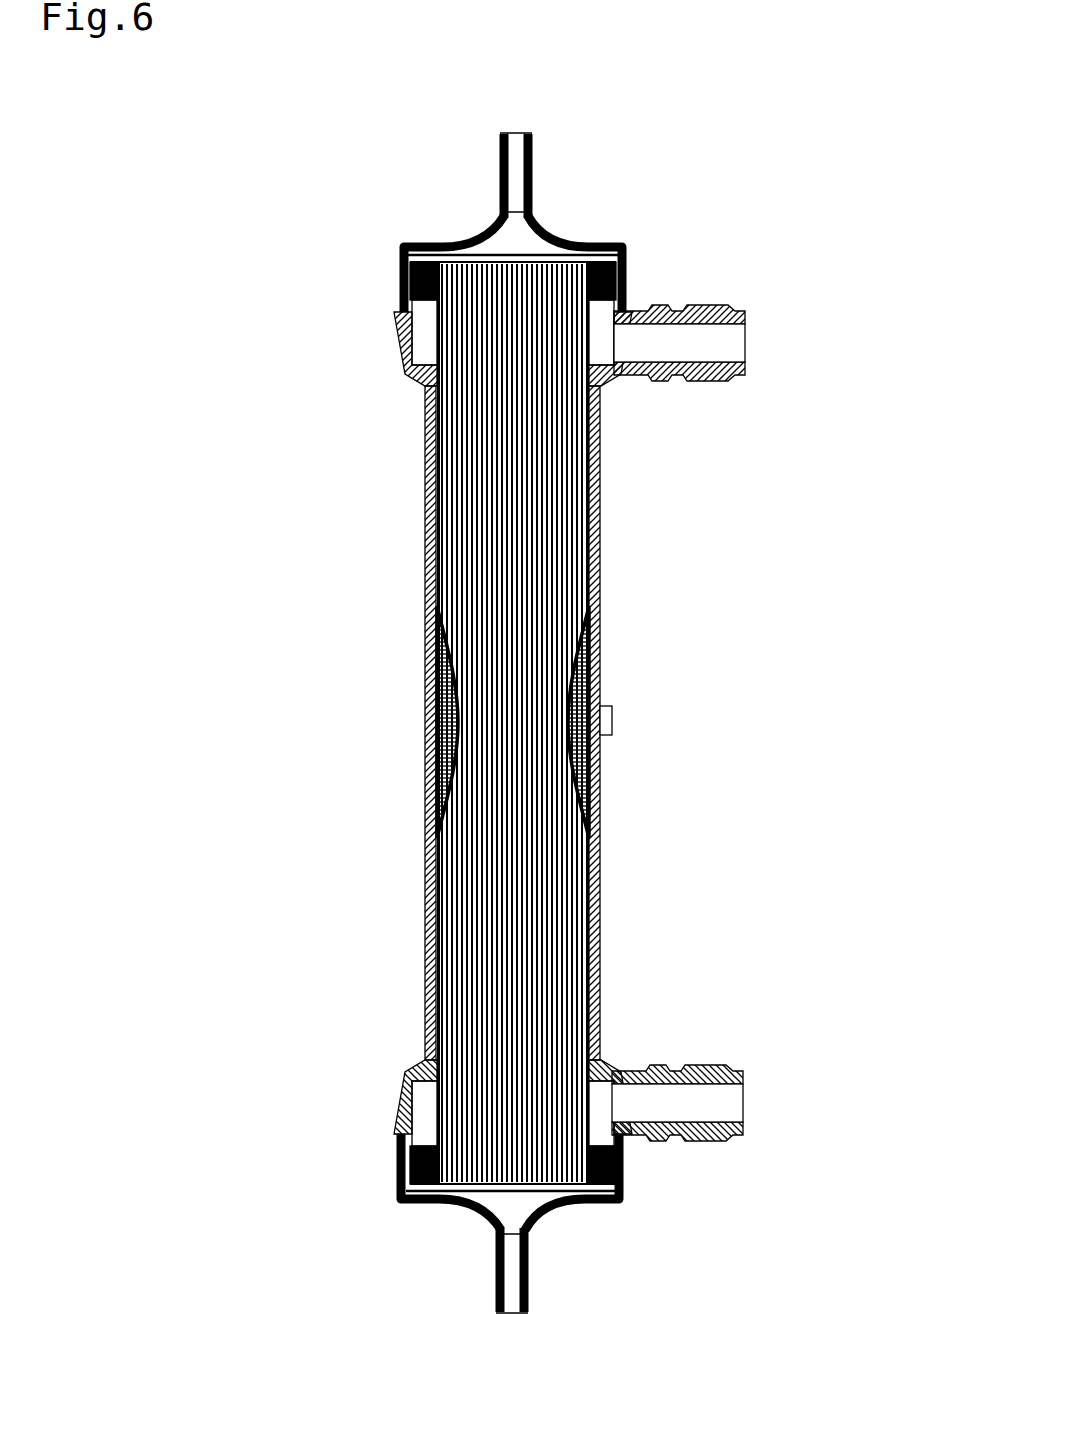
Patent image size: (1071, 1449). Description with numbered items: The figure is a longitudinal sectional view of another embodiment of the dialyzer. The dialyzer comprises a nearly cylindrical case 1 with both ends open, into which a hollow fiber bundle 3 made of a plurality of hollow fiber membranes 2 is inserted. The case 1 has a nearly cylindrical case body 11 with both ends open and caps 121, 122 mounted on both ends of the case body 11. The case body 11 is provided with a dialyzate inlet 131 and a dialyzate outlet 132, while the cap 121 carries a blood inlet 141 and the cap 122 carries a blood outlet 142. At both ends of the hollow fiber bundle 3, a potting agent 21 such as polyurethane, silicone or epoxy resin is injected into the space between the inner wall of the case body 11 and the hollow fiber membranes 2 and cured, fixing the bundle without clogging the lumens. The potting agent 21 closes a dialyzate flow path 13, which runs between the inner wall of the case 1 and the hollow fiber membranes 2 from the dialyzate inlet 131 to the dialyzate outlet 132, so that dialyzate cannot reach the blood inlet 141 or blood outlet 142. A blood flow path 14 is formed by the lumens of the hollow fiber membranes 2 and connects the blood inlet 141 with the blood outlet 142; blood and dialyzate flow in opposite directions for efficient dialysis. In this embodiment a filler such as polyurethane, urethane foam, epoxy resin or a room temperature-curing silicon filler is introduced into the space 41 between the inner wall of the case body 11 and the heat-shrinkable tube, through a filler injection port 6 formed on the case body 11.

The case 1 is at (531, 725).
The hollow fiber membranes 2 is at (565, 563).
The hollow fiber bundle 3 is at (502, 723).
The case body 11 is at (420, 905).
The dialyzate flow path 13 is at (757, 647).
The dialyzate inlet 131 is at (730, 1070).
The dialyzate outlet 132 is at (745, 312).
The blood flow path 14 is at (455, 725).
The blood inlet 141 is at (500, 136).
The blood outlet 142 is at (527, 1290).
The cap 121 is at (400, 246).
The cap 122 is at (400, 1206).
The potting agent 21 is at (402, 284).
The space 41 is at (420, 705).
The filler injection port 6 is at (612, 706).